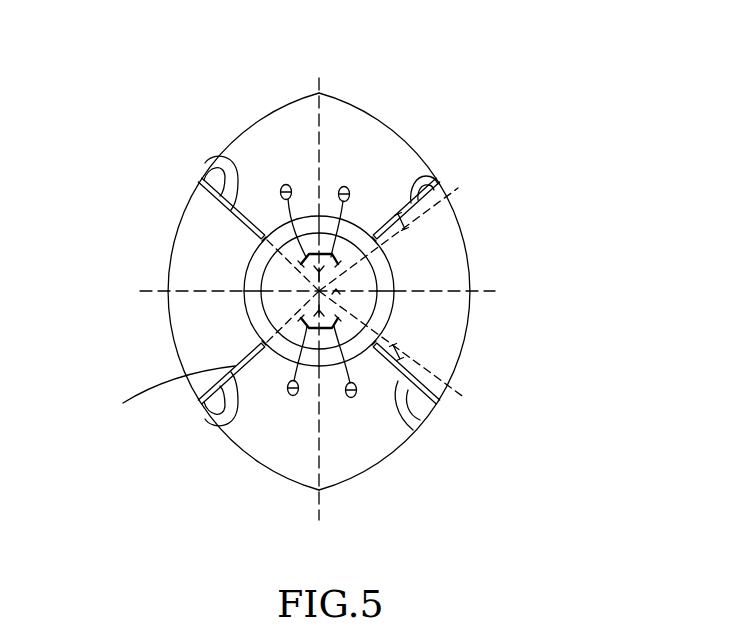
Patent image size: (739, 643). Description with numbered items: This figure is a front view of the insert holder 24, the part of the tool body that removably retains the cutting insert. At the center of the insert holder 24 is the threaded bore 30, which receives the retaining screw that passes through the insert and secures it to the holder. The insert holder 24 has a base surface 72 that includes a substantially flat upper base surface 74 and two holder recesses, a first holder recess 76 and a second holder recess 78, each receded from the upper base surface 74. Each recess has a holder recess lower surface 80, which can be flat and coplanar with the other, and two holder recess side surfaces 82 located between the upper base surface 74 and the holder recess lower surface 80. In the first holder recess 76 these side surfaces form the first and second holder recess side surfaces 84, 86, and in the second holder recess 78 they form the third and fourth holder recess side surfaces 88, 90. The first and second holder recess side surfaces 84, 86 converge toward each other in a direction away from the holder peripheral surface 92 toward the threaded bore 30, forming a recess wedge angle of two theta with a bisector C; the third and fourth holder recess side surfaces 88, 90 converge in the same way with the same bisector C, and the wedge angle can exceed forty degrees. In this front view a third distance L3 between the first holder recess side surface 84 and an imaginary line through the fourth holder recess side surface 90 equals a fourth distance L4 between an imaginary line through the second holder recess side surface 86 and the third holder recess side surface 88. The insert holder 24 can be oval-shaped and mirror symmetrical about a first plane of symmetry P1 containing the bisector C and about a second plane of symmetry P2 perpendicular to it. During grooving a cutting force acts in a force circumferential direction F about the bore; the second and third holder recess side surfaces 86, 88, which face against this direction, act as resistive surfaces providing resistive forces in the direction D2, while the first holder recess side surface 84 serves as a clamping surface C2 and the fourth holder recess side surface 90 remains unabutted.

The insert holder 24 is at (102, 102).
The threaded bore 30 is at (412, 192).
The base surface 72 is at (240, 417).
The upper base surface 74 is at (443, 317).
The first holder recess 76 is at (343, 151).
The second holder recess 78 is at (358, 413).
The holder recess lower surface 80 is at (272, 148).
The holder recess side surfaces 82 is at (230, 163).
The first holder recess side surface 84 is at (425, 174).
The second holder recess side surface 86 is at (215, 161).
The third holder recess side surface 88 is at (417, 397).
The fourth holder recess side surface 90 is at (215, 395).
The holder peripheral surface 92 is at (402, 133).
The first plane of symmetry P1 is at (317, 288).
The second plane of symmetry P2 is at (333, 291).
The bisector C is at (325, 531).
The clamping surface C2 is at (393, 211).
The third distance L3 is at (398, 355).
The fourth distance L4 is at (403, 212).
The force circumferential direction of resistive forces D2 is at (245, 212).
The force circumferential direction F is at (600, 142).